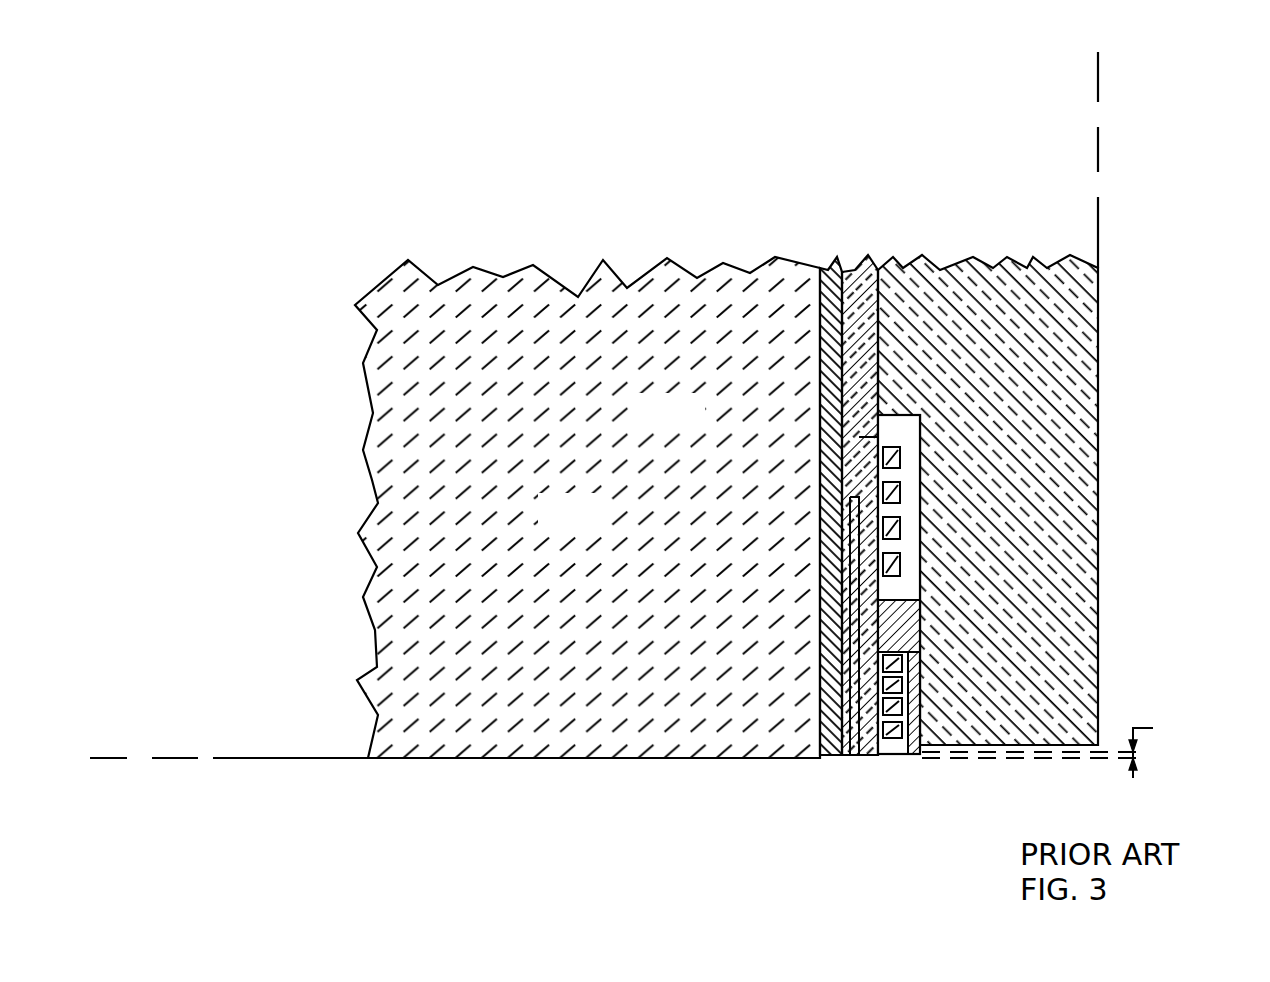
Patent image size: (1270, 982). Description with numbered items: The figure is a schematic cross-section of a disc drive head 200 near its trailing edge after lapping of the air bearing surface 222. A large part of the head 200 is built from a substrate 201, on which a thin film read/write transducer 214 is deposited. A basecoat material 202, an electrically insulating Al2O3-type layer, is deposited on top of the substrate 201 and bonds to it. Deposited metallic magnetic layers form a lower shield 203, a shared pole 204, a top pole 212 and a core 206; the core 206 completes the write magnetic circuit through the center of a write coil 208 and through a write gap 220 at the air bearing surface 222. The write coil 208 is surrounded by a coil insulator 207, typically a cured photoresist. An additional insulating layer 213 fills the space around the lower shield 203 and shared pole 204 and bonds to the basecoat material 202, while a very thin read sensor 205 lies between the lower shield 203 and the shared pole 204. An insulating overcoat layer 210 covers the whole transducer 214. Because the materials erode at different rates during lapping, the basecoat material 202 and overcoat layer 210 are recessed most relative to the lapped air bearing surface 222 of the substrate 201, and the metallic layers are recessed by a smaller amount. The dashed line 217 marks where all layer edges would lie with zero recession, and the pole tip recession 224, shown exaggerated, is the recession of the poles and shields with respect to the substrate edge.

The head 200 is at (1158, 292).
The substrate 201 is at (596, 526).
The basecoat material 202 is at (828, 268).
The lower shield 203 is at (847, 760).
The shared pole 204 is at (873, 760).
The read sensor 205 is at (858, 786).
The core 206 is at (897, 614).
The coil insulator 207 is at (907, 427).
The write coil 208 is at (890, 530).
The overcoat layer 210 is at (972, 257).
The top pole 212 is at (910, 760).
The insulating layer 213 is at (855, 270).
The thin film read/write transducer 214 is at (781, 480).
The dashed line 217 is at (1072, 757).
The write gap 220 is at (892, 784).
The air bearing surface 222 is at (563, 759).
The pole tip recession 224 is at (1164, 741).